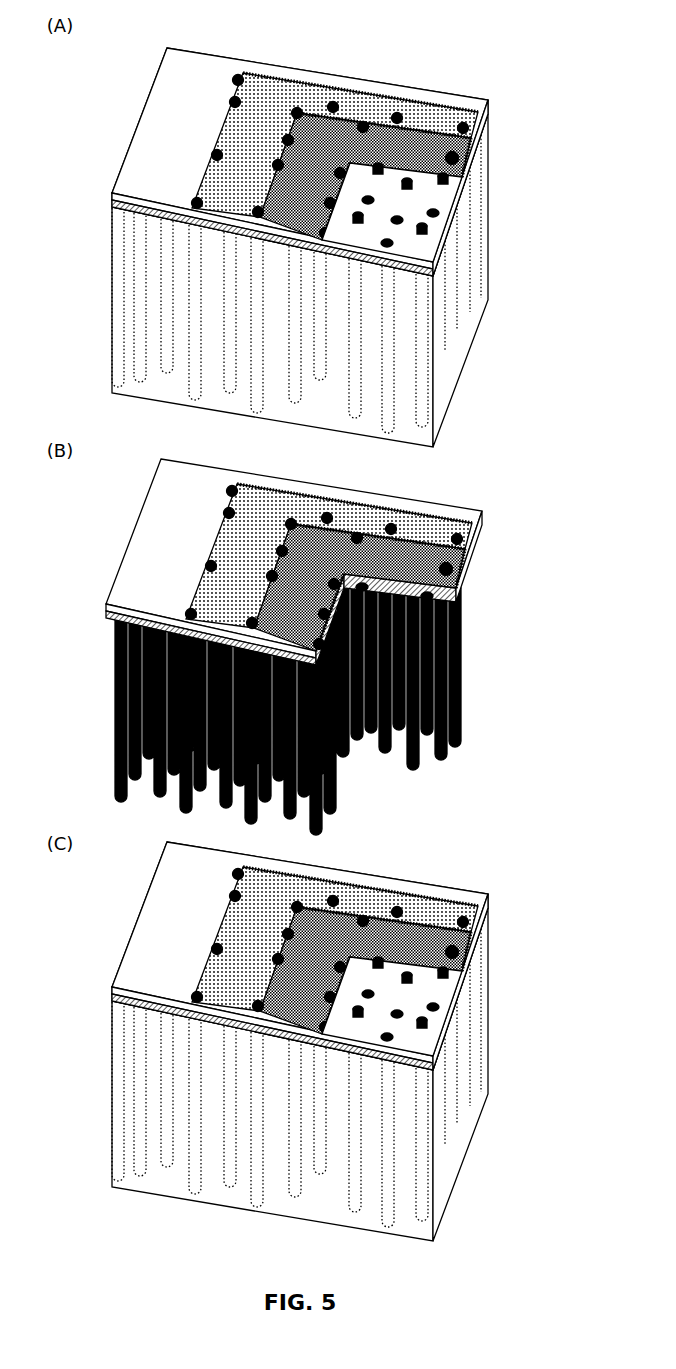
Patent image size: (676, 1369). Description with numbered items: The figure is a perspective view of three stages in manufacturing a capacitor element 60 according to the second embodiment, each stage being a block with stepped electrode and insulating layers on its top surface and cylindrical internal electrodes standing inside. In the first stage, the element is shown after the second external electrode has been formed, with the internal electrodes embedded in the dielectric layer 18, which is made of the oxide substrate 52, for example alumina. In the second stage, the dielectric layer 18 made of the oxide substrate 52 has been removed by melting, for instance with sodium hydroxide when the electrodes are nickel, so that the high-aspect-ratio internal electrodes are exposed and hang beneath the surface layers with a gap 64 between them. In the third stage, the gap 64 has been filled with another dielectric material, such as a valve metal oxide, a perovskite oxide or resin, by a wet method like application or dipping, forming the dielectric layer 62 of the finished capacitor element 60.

The dielectric layer 18 is at (490, 167).
The oxide substrate 52 is at (343, 247).
The capacitor element 60 is at (331, 1041).
The dielectric layer 62 is at (323, 1041).
The gap 64 is at (367, 742).